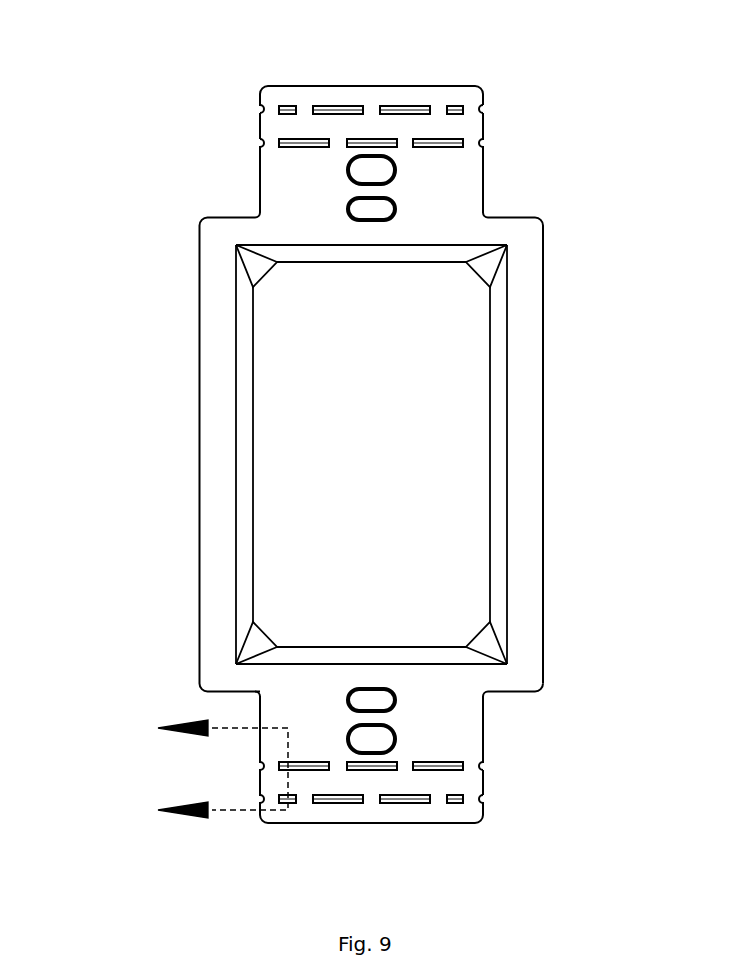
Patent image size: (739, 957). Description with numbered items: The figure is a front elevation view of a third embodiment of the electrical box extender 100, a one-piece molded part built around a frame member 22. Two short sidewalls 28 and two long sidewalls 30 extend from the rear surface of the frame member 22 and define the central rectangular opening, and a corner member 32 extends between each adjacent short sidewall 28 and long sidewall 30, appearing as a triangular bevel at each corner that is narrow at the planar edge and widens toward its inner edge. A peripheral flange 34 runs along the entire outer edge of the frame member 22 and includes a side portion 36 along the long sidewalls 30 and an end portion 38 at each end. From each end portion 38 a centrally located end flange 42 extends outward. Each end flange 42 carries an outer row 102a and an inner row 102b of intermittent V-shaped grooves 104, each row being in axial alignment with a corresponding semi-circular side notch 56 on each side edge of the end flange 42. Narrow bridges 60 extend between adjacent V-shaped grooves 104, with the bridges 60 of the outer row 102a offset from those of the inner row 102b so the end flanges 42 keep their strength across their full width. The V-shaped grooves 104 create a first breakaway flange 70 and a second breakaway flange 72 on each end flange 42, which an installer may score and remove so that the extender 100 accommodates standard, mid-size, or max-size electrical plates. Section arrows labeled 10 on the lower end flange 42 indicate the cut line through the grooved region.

The electrical box extender 100 is at (90, 326).
The frame member 22 is at (427, 468).
The short sidewall 28 is at (327, 255).
The long sidewall 30 is at (245, 373).
The corner member 32 is at (482, 267).
The peripheral flange 34 is at (526, 497).
The side portion 36 is at (543, 592).
The end portion 38 is at (496, 679).
The end flange 42 is at (380, 458).
The side notch 56 is at (485, 109).
The narrow bridge 60 is at (305, 800).
The first breakaway flange portion 70 is at (261, 92).
The second breakaway flange portion 72 is at (267, 126).
The outer row 102a is at (457, 106).
The inner row 102b is at (450, 144).
The V-shaped groove 104 is at (408, 106).
The section line 10 is at (223, 773).